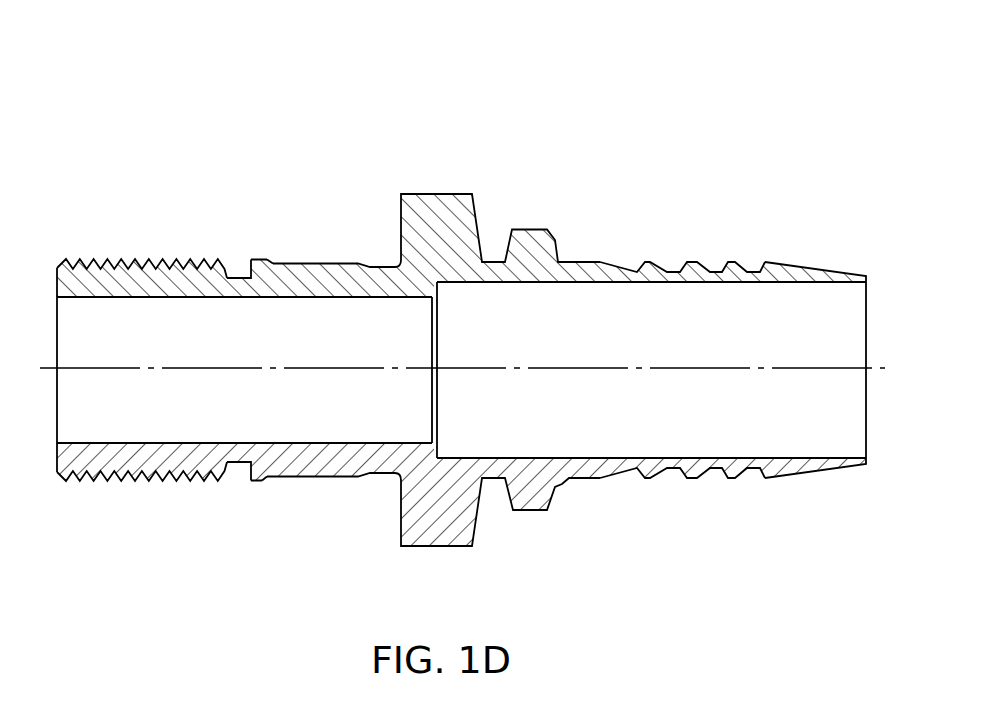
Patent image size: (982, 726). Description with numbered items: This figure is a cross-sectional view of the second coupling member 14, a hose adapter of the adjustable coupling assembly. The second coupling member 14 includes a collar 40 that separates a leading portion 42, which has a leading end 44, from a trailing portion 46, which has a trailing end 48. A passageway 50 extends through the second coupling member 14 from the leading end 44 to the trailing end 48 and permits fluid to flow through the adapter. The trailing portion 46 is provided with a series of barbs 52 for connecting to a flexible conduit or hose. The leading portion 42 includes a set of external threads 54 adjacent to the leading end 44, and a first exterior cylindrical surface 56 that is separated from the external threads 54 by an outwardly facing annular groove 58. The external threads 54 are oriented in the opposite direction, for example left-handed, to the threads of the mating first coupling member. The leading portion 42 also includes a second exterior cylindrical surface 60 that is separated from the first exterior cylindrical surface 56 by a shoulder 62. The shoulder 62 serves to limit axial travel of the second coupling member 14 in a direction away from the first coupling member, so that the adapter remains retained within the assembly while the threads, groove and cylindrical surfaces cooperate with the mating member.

The second coupling member 14 is at (507, 110).
The collar 40 is at (433, 192).
The leading portion 42 is at (263, 182).
The leading end 44 is at (57, 453).
The trailing portion 46 is at (660, 498).
The trailing end 48 is at (866, 276).
The passageway 50 is at (609, 340).
The barbs 52 is at (735, 261).
The external threads 54 is at (137, 260).
The first exterior cylindrical surface 56 is at (260, 259).
The outwardly facing annular groove 58 is at (238, 270).
The second exterior cylindrical surface 60 is at (340, 263).
The shoulder 62 is at (267, 260).